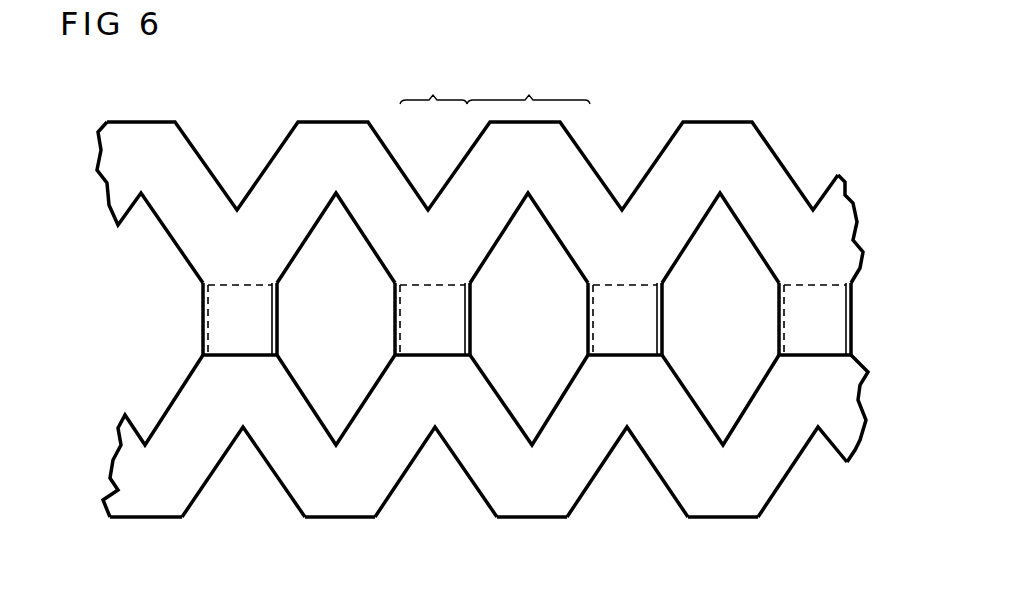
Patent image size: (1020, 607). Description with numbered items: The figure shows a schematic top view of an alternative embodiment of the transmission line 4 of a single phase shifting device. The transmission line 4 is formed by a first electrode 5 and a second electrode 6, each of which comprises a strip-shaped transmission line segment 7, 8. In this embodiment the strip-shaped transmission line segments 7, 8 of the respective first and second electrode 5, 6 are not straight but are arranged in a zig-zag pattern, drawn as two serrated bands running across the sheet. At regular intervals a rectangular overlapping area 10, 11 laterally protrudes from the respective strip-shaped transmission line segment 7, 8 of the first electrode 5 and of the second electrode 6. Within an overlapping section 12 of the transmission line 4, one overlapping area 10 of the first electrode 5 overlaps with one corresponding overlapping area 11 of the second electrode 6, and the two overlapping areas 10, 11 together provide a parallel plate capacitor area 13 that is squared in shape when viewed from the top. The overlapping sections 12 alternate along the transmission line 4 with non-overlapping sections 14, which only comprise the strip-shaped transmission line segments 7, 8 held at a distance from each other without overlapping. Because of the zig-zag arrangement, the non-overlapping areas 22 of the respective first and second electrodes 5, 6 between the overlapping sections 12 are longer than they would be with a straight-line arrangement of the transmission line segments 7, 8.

The transmission line 4 is at (808, 86).
The first electrode 5 is at (137, 478).
The second electrode 6 is at (134, 173).
The strip-shaped transmission line segment 7 is at (338, 521).
The strip-shaped transmission line segment 8 is at (719, 131).
The overlapping area 10 is at (203, 349).
The overlapping area 11 is at (208, 303).
The overlapping section 12 is at (433, 86).
The parallel plate capacitor area 13 is at (233, 330).
The non-overlapping section 14 is at (528, 86).
The non-overlapping area 22 is at (298, 492).